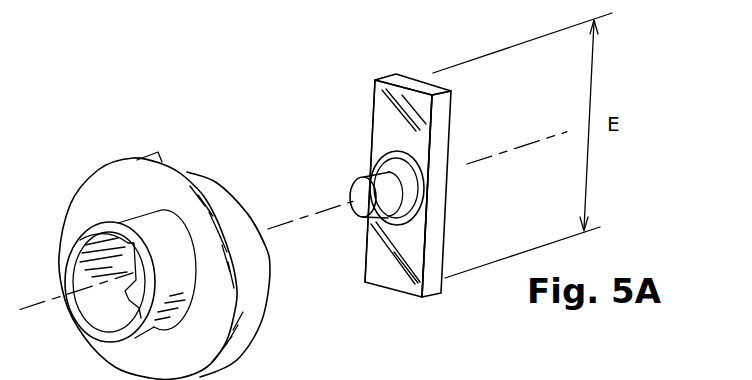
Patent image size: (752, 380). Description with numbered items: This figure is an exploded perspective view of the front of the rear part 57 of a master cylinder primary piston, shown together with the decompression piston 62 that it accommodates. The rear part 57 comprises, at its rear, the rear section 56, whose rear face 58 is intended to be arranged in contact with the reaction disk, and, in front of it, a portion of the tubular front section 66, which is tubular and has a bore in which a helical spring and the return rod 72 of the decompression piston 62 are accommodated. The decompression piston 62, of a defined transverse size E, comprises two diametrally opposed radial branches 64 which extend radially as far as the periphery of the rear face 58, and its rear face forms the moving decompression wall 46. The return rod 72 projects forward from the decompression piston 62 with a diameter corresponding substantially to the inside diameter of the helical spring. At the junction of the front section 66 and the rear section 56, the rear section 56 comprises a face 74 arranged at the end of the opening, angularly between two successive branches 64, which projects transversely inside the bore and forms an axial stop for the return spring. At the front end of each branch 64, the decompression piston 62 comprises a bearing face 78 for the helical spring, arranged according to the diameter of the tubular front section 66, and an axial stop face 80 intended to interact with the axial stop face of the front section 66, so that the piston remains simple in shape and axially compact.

The moving decompression wall 46 is at (448, 162).
The rear section 56 is at (228, 190).
The rear part 57 is at (190, 233).
The rear face 58 is at (255, 208).
The decompression piston 62 is at (415, 195).
The radial branches 64 is at (373, 92).
The tubular front section 66 is at (175, 282).
The return rod 72 is at (372, 163).
The face 74 is at (133, 245).
The bearing face 78 is at (425, 208).
The axial stop face 80 is at (402, 142).